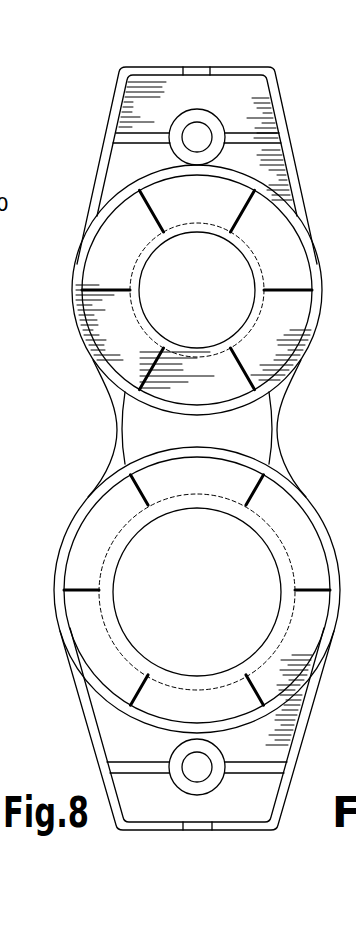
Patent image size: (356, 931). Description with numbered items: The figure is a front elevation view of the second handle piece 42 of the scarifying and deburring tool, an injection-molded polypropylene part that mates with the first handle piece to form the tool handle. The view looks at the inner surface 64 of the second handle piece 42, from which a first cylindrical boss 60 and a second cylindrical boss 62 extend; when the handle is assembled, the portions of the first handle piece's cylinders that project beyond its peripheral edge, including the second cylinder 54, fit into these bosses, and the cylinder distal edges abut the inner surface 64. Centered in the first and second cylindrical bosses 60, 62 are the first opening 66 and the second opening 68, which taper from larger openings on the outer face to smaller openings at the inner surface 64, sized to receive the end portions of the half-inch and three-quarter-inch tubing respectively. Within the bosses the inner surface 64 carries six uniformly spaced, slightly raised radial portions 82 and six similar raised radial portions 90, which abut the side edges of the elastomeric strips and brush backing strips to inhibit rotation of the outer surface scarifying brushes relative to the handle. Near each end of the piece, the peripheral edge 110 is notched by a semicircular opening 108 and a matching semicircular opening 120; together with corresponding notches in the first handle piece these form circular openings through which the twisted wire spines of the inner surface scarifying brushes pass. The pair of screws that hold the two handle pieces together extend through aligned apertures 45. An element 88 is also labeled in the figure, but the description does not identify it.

The second handle piece 42 is at (335, 380).
The aligned apertures 45 is at (186, 152).
The second cylinder 54 is at (153, 428).
The first cylindrical boss 60 is at (274, 206).
The second cylindrical boss 62 is at (247, 457).
The inner surface 64 is at (236, 438).
The first opening 66 is at (148, 316).
The second opening 68 is at (126, 638).
The raised radial portions 82 is at (110, 294).
The lower wall 88 is at (167, 669).
The raised radial portions 90 is at (150, 677).
The semicircular opening 108 is at (202, 67).
The peripheral edge 110 is at (277, 103).
The semicircular opening 120 is at (201, 831).